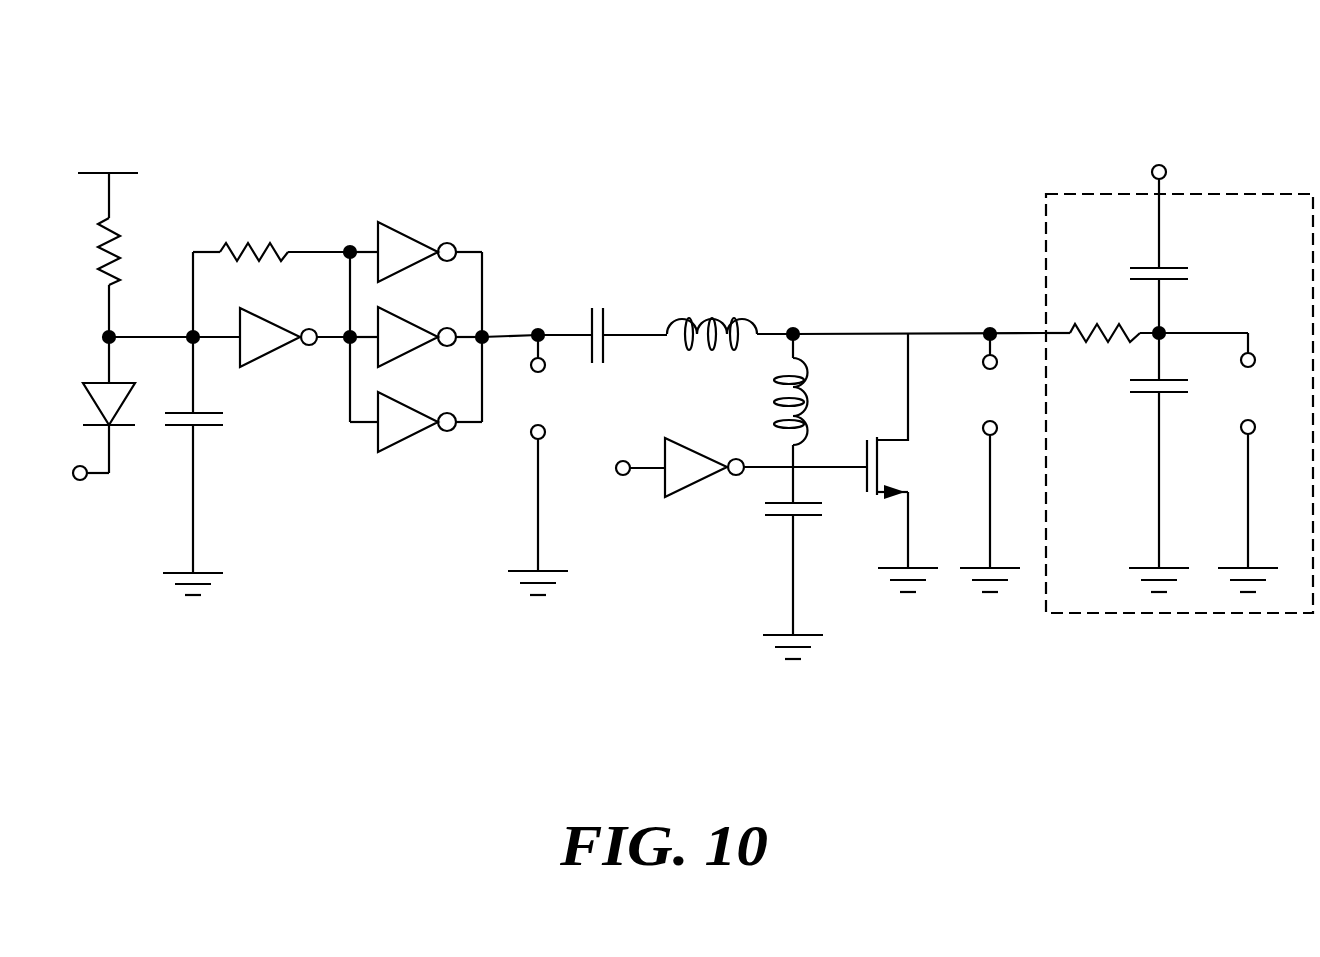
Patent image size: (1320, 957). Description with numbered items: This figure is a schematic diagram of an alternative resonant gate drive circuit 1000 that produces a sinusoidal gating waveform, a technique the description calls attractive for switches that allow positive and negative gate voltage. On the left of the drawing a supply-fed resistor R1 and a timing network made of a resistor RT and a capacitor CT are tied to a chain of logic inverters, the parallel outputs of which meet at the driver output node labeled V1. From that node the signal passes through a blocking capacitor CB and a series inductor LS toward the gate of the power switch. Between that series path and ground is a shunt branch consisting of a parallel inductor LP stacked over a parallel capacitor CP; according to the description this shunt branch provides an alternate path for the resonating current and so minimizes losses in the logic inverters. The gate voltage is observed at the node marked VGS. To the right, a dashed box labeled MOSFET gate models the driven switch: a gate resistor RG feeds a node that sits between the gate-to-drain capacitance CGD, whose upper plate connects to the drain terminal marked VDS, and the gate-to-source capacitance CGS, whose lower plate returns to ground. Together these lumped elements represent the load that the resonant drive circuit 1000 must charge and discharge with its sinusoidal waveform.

The resonant gate drive circuit 1000 is at (758, 132).
The pull-up resistor R1 is at (85, 251).
The timing resistor RT is at (254, 231).
The timing capacitor CT is at (200, 444).
The driver output voltage node V1 is at (538, 462).
The blocking capacitor CB is at (615, 323).
The series inductor LS is at (712, 314).
The parallel inductor LP is at (807, 401).
The parallel capacitor CP is at (798, 536).
The gate-source voltage node VGS is at (990, 460).
The gate resistor RG is at (1105, 317).
The drain-source voltage node VDS is at (1183, 214).
The gate-drain capacitance CGD is at (1174, 264).
The gate-source capacitance CGS is at (1173, 415).